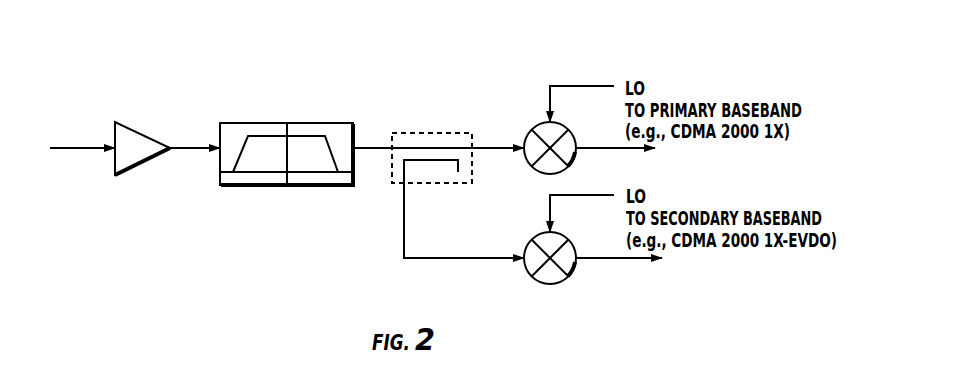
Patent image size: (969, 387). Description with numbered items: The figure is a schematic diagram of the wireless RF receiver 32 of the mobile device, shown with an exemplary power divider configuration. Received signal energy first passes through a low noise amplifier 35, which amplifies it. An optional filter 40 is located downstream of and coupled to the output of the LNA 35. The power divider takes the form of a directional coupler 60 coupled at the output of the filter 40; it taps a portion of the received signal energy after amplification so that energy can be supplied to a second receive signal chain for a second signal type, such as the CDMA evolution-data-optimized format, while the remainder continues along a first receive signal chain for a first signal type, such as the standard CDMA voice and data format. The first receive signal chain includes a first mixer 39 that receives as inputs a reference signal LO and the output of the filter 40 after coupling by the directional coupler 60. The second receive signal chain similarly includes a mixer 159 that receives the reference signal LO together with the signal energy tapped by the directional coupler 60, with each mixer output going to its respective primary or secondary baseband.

The wireless RF receiver 32 is at (622, 46).
The low noise amplifier (LNA) 35 is at (135, 130).
The filter 40 is at (298, 122).
The directional coupler 60 is at (423, 132).
The first mixer 39 is at (541, 124).
The mixer 159 is at (540, 235).